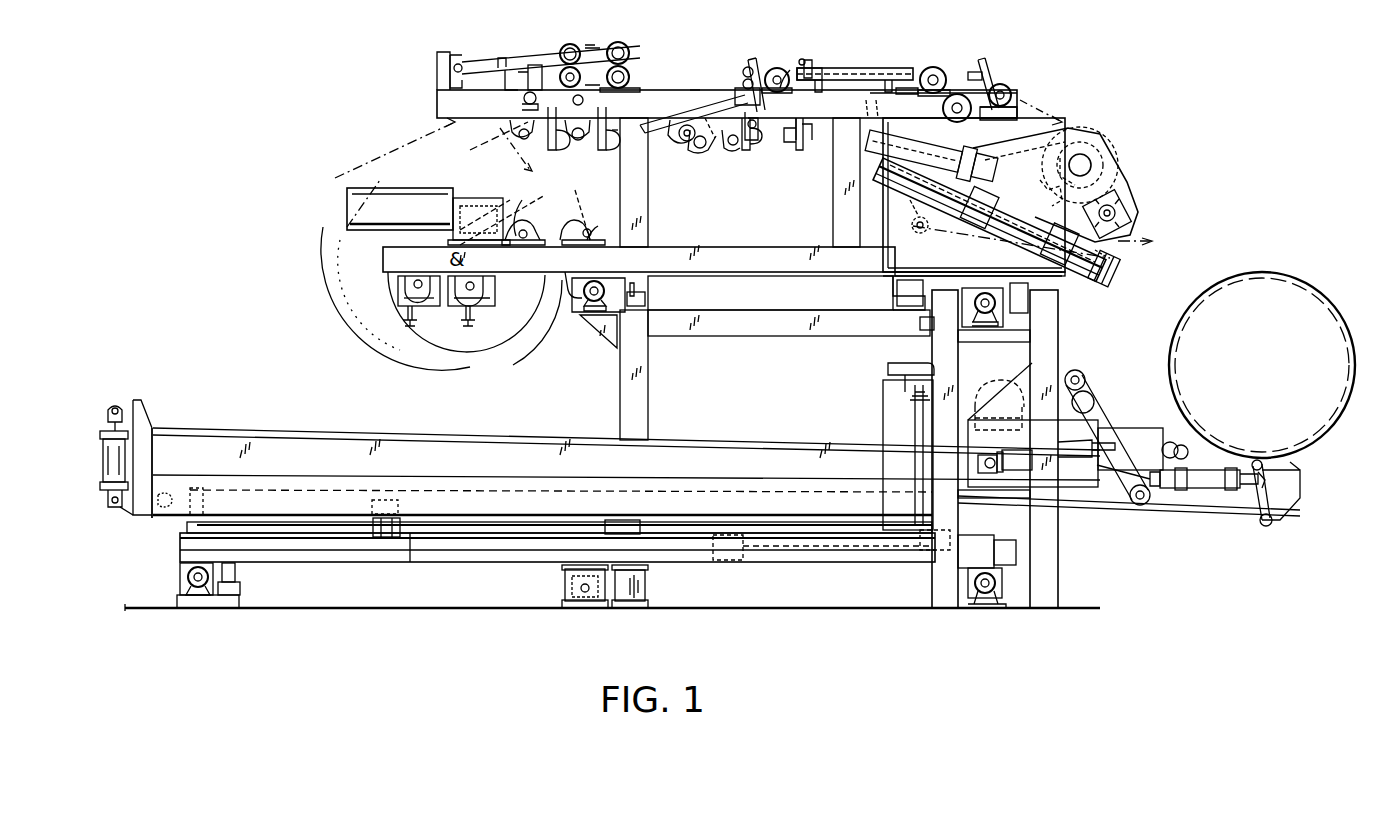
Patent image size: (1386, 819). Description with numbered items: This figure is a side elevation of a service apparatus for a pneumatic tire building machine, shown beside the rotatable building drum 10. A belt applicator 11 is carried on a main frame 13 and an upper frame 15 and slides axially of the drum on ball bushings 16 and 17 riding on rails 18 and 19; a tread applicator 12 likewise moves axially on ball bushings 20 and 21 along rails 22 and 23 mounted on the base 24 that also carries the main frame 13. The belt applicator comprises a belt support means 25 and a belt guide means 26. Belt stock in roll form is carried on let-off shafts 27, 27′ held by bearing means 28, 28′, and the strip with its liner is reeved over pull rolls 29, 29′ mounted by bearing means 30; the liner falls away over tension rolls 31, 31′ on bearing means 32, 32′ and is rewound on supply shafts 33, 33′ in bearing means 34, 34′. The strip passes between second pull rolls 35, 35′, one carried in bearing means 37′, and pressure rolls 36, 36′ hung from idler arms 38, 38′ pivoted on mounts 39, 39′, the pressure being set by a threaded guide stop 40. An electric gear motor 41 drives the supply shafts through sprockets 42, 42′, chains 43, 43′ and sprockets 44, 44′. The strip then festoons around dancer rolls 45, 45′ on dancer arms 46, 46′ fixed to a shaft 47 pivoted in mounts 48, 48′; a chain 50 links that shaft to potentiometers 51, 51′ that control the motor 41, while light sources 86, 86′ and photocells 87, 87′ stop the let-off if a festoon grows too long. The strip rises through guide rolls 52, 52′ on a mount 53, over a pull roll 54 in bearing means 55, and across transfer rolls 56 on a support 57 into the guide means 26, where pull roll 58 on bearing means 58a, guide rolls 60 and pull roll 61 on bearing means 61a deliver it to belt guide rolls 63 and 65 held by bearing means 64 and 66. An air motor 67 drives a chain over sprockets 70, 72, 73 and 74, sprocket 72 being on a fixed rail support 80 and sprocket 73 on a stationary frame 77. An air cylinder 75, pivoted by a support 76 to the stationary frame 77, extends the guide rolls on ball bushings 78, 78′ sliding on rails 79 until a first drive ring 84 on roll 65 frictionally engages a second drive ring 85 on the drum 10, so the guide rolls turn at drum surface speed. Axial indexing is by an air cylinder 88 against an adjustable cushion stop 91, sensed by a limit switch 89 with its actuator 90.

The building drum 10 is at (1319, 296).
The belt applicator 11 is at (860, 68).
The tread applicator 12 is at (766, 439).
The main frame 13 is at (650, 394).
The upper frame 15 is at (688, 90).
The ball bushing 16 is at (566, 278).
The ball bushing 17 is at (970, 298).
The rail 18 is at (575, 320).
The rail 19 is at (975, 308).
The ball bushing 20 is at (188, 584).
The ball bushing 21 is at (998, 588).
The rail 22 is at (186, 573).
The rail 23 is at (996, 578).
The base 24 is at (917, 608).
The belt support means 25 is at (706, 100).
The belt guide means 26 is at (1136, 198).
The let-off shaft 27 is at (412, 285).
The let-off shaft 27′ is at (476, 286).
The bearing means 28 is at (404, 295).
The bearing means 28′ is at (480, 293).
The pull roll 29 is at (522, 96).
The pull roll 29′ is at (584, 100).
The bearing means 30 is at (480, 116).
The tension roll 31 is at (528, 143).
The tension roll 31′ is at (578, 142).
The bearing means 32 is at (516, 126).
The bearing means 32′ is at (604, 152).
The supply shaft 33 is at (528, 200).
The supply shaft 33′ is at (605, 226).
The bearing means 34 is at (570, 286).
The bearing means 34′ is at (612, 248).
The second pull roll 35 is at (578, 67).
The second pull roll 35′ is at (635, 72).
The pressure roll 36 is at (568, 44).
The pressure roll 36′ is at (628, 52).
The bearing means 37′ is at (642, 86).
The idler arm 38 is at (482, 62).
The idler arm 38′ is at (598, 48).
The mount 39 is at (454, 58).
The mount 39′ is at (504, 58).
The threaded guide stop 40 is at (538, 66).
The electric gear motor 41 is at (377, 187).
The sprocket 42 is at (433, 259).
The sprocket 42′ is at (512, 270).
The chain 43 is at (496, 209).
The chain 43′ is at (575, 208).
The sprocket 44 is at (523, 215).
The sprocket 44′ is at (605, 235).
The dancer roll 45 is at (670, 119).
The dancer roll 45′ is at (722, 148).
The dancer arm 46 is at (700, 122).
The dancer arm 46′ is at (814, 132).
The shaft 47 is at (708, 86).
The mount 48 is at (744, 78).
The mount 48′ is at (859, 114).
The chain 50 is at (708, 148).
The potentiometer 51 is at (690, 148).
The potentiometer 51′ is at (726, 143).
The guide rolls 52 is at (751, 58).
The guide rolls 52′ is at (808, 60).
The mount 53 is at (765, 126).
The pull roll 54 is at (782, 74).
The bearing means 55 is at (786, 68).
The transfer rolls 56 is at (838, 64).
The support 57 is at (872, 66).
The pull roll 58 is at (940, 70).
The bearing means 58a is at (932, 72).
The guide rolls 60 is at (986, 64).
The pull roll 61 is at (1010, 88).
The bearing means 61a is at (1014, 92).
The belt guide roll 63 is at (1098, 150).
The bearing means 64 is at (1085, 128).
The belt guide roll 65 is at (1126, 196).
The bearing means 66 is at (1116, 212).
The air motor 67 is at (979, 82).
The sprocket 70 is at (1065, 133).
The sprocket 72 is at (1110, 252).
The sprocket 73 is at (918, 233).
The sprocket 74 is at (948, 106).
The air cylinder 75 is at (1000, 152).
The support 76 is at (943, 105).
The stationary frame 77 is at (826, 160).
The ball bushings 78 is at (985, 202).
The ball bushings 78′ is at (903, 196).
The rails 79 is at (999, 225).
The fixed rail support 80 is at (1112, 278).
The first drive ring 84 is at (1043, 239).
The second drive ring 85 is at (1264, 272).
The light source 86 is at (742, 152).
The light source 86′ is at (788, 142).
The photocell 87 is at (550, 148).
The photocell 87′ is at (614, 135).
The air cylinder 88 is at (1028, 301).
The limit switch 89 is at (636, 287).
The actuator 90 is at (646, 300).
The adjustable cushion stop 91 is at (910, 320).